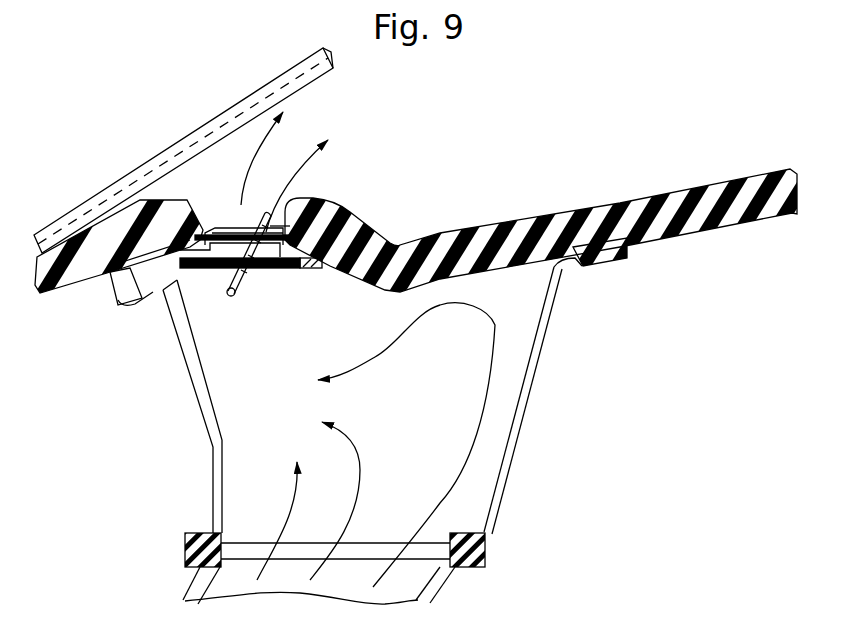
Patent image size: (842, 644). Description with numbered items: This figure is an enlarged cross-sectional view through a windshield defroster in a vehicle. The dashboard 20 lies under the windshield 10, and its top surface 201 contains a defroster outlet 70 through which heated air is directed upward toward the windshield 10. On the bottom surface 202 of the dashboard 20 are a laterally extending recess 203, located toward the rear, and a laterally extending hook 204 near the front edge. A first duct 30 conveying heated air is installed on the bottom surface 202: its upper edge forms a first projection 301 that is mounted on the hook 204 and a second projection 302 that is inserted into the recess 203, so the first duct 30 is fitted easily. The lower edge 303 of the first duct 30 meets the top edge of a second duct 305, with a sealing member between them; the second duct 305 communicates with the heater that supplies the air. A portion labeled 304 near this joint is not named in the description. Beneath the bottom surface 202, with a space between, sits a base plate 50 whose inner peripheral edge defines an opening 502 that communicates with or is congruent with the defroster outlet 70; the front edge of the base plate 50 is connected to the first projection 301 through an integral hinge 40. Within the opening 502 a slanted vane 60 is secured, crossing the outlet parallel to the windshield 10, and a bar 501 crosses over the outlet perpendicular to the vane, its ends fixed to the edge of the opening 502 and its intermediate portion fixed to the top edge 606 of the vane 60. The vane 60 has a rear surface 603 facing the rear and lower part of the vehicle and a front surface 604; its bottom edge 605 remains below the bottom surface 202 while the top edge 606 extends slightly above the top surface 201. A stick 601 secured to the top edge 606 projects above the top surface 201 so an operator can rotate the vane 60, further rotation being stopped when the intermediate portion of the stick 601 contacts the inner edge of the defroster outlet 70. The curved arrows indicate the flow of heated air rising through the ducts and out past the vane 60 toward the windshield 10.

The windshield 10 is at (257, 95).
The dashboard 20 is at (427, 222).
The top surface 201 is at (343, 200).
The bottom surface 202 is at (620, 262).
The recess 203 is at (588, 246).
The hook 204 is at (127, 308).
The first duct 30 is at (532, 387).
The first projection 301 is at (165, 292).
The second projection 302 is at (582, 255).
The lower edge 303 is at (457, 533).
The groove of housing 304 is at (484, 551).
The second duct 305 is at (437, 588).
The integral hinge 40 is at (130, 303).
The base plate 50 is at (315, 270).
The bar 501 is at (278, 228).
The opening 502 is at (268, 265).
The vane 60 is at (226, 277).
The stick 601 is at (273, 230).
The rear surface 603 is at (248, 262).
The front surface 604 is at (233, 235).
The bottom edge 605 is at (227, 298).
The top edge 606 is at (250, 240).
The defroster outlet 70 is at (223, 232).